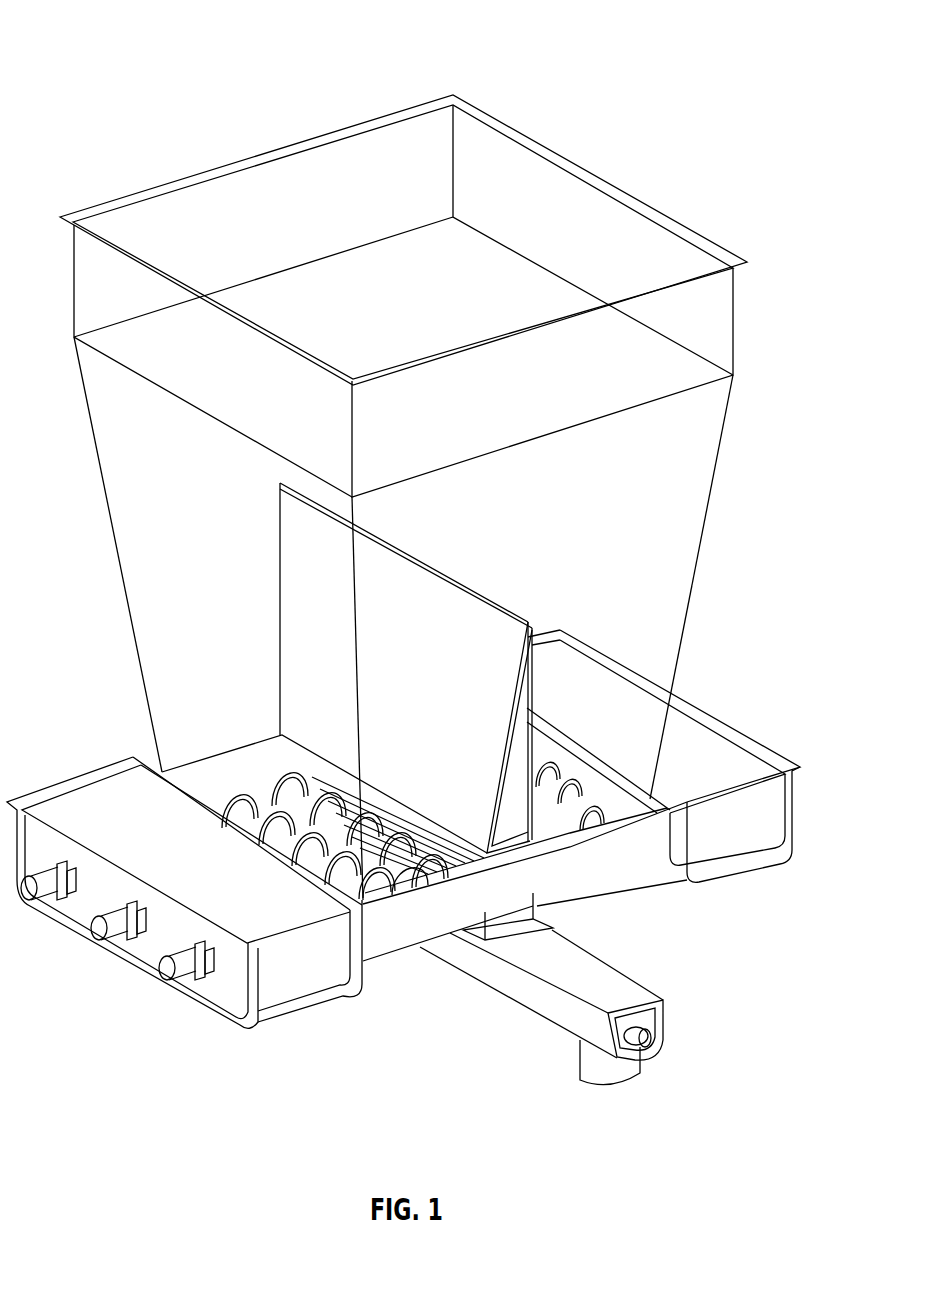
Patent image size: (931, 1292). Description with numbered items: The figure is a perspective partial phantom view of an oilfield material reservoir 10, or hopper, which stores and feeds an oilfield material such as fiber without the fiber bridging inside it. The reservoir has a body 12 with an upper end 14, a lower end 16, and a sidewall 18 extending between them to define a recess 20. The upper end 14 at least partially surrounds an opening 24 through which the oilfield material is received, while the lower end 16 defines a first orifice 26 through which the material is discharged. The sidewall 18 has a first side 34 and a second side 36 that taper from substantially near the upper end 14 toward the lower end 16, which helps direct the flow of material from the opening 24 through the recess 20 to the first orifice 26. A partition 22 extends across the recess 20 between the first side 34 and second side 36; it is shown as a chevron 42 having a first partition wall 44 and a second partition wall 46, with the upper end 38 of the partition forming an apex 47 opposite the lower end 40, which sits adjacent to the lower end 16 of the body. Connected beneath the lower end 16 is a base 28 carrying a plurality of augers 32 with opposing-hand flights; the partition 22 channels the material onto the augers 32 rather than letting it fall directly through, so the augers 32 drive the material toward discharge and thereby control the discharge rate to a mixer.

The oilfield material reservoir 10 is at (132, 39).
The body 12 is at (697, 442).
The upper end 14 is at (553, 152).
The lower end 16 is at (620, 808).
The sidewall 18 is at (683, 550).
The recess 20 is at (480, 251).
The partition 22 is at (533, 655).
The opening 24 is at (217, 193).
The first orifice 26 is at (148, 720).
The base 28 is at (615, 872).
The augers 32 is at (395, 875).
The first side 34 is at (685, 515).
The second side 36 is at (257, 299).
The upper end 38 is at (470, 590).
The lower end 40 is at (282, 738).
The chevron 42 is at (532, 703).
The first partition wall 44 is at (280, 605).
The second partition wall 46 is at (532, 730).
The apex 47 is at (428, 565).